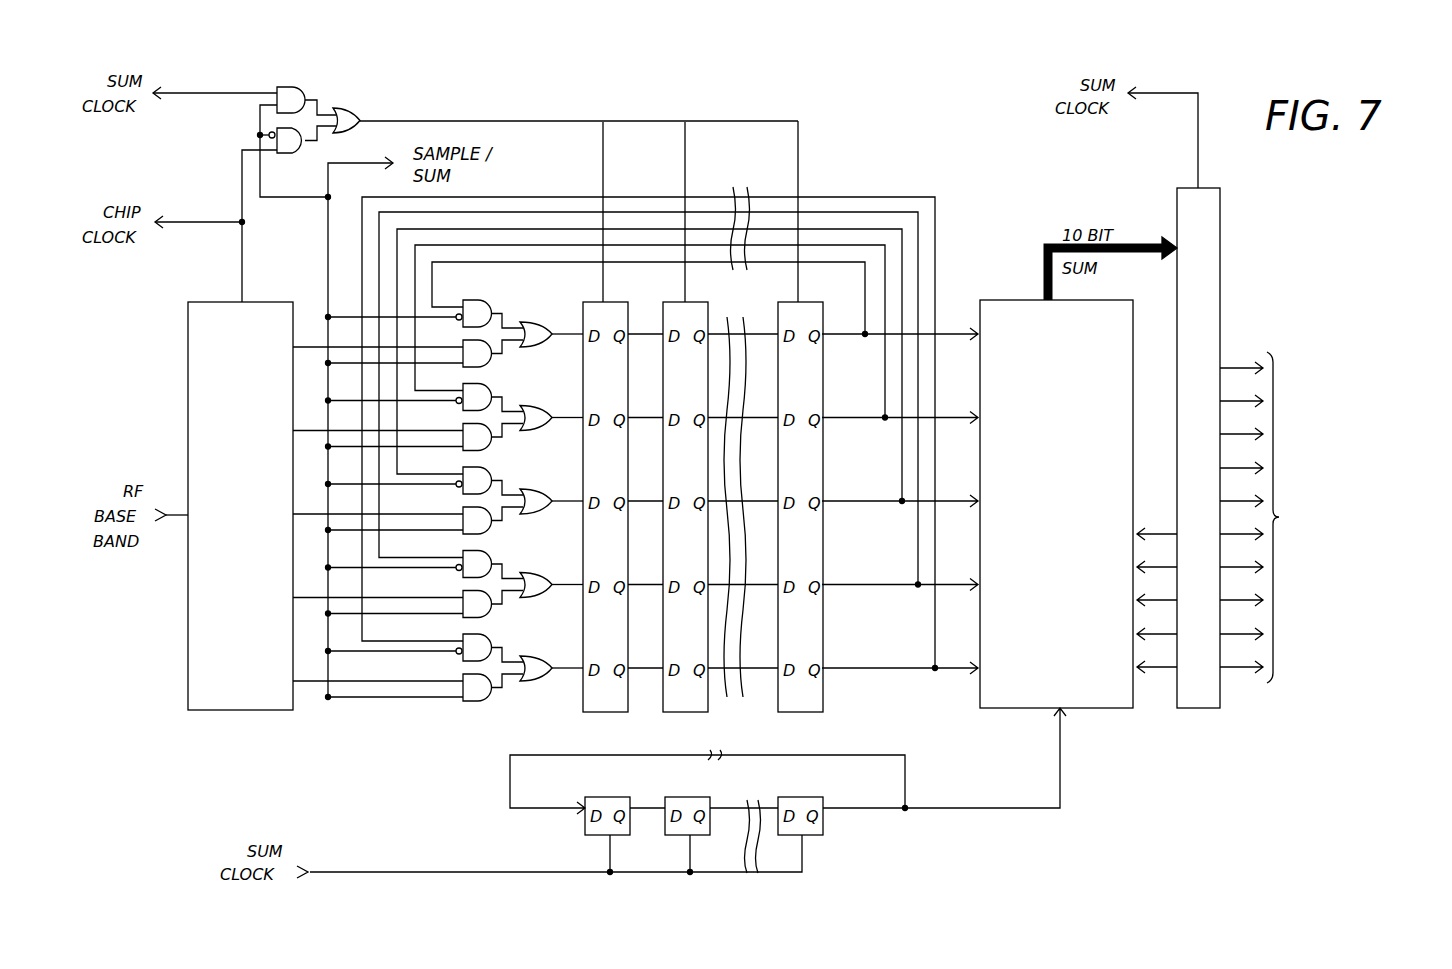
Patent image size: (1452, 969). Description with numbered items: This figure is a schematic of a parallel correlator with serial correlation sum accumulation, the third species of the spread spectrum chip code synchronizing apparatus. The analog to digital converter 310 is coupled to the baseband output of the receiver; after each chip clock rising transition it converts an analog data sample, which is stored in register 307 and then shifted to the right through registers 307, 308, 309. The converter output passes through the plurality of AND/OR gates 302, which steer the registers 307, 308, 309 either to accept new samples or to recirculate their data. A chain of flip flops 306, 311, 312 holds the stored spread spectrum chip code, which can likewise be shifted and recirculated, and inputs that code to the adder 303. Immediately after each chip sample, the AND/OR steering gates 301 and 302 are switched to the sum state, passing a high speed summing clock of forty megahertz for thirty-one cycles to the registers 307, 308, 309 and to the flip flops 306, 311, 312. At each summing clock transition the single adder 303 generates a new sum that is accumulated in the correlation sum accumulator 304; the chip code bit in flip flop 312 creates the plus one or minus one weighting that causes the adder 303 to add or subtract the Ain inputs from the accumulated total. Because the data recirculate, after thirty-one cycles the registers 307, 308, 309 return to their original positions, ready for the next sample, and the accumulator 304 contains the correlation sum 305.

The AND/OR steering gates 301 is at (353, 107).
The AND/OR gates 302 is at (536, 320).
The adder 303 is at (1023, 708).
The correlation sum accumulator 304 is at (1223, 682).
The correlation sum 305 is at (1275, 558).
The flip flop 306 is at (610, 797).
The register 307 is at (607, 712).
The register 308 is at (702, 712).
The register 309 is at (806, 712).
The analog to digital converter 310 is at (265, 710).
The flip flop 311 is at (705, 797).
The flip flop 312 is at (808, 797).